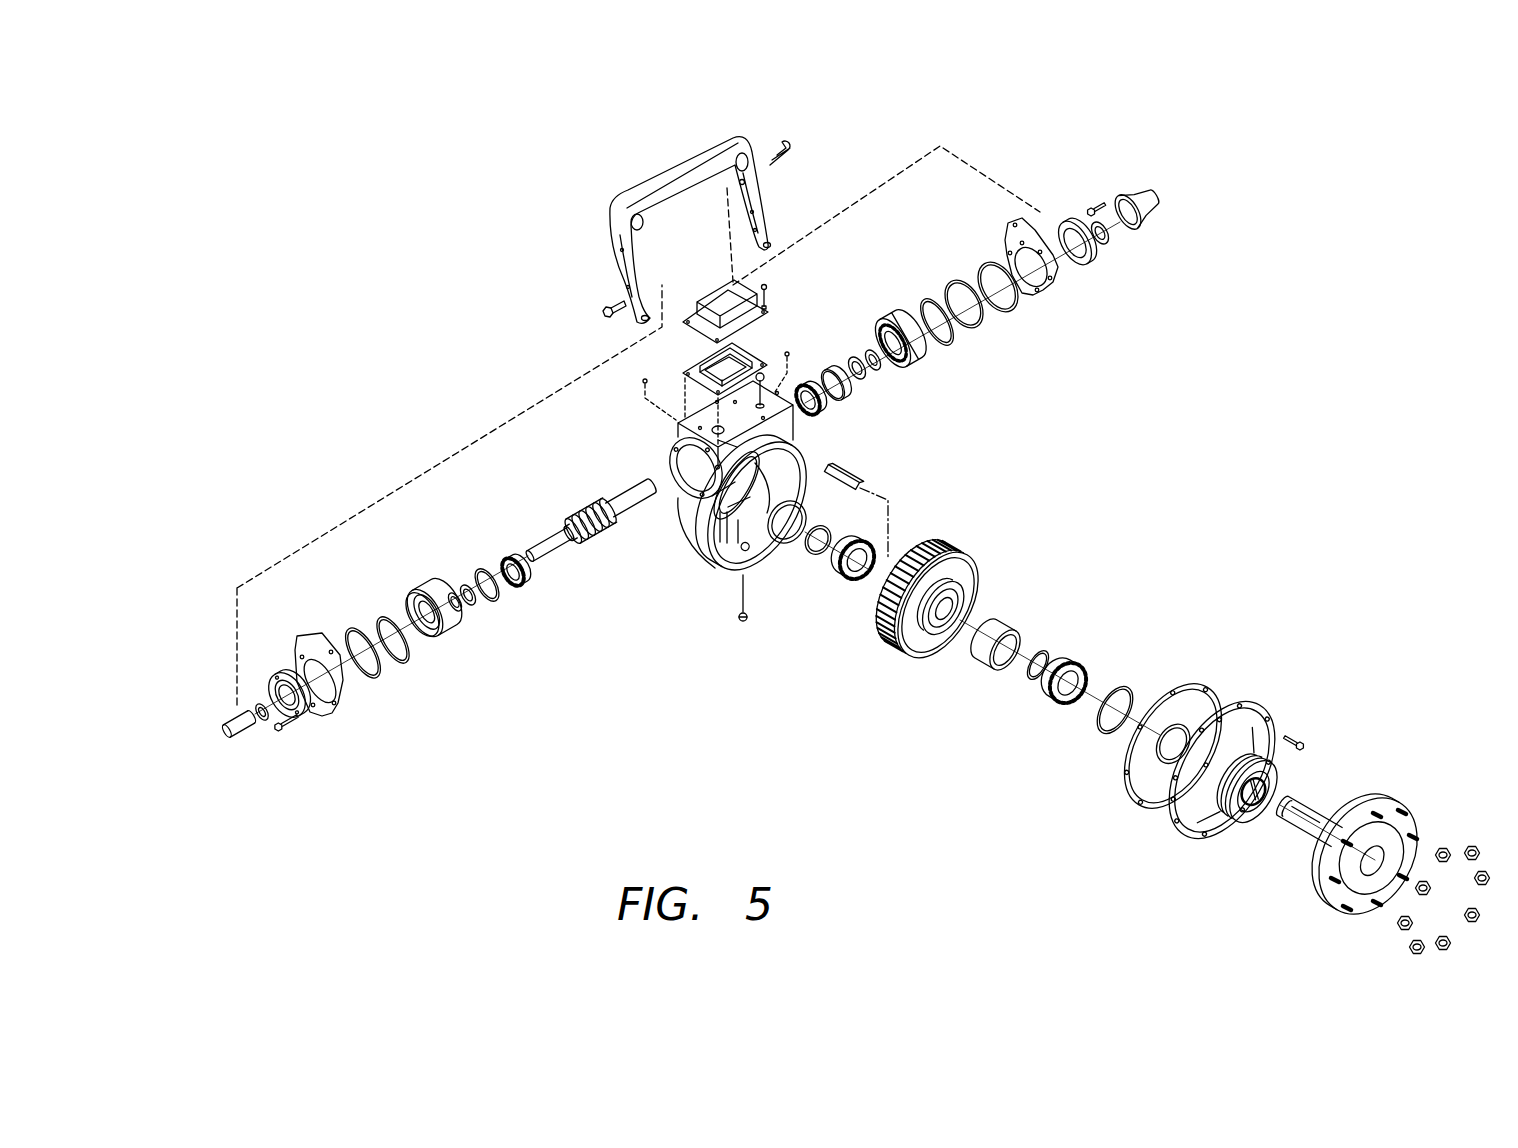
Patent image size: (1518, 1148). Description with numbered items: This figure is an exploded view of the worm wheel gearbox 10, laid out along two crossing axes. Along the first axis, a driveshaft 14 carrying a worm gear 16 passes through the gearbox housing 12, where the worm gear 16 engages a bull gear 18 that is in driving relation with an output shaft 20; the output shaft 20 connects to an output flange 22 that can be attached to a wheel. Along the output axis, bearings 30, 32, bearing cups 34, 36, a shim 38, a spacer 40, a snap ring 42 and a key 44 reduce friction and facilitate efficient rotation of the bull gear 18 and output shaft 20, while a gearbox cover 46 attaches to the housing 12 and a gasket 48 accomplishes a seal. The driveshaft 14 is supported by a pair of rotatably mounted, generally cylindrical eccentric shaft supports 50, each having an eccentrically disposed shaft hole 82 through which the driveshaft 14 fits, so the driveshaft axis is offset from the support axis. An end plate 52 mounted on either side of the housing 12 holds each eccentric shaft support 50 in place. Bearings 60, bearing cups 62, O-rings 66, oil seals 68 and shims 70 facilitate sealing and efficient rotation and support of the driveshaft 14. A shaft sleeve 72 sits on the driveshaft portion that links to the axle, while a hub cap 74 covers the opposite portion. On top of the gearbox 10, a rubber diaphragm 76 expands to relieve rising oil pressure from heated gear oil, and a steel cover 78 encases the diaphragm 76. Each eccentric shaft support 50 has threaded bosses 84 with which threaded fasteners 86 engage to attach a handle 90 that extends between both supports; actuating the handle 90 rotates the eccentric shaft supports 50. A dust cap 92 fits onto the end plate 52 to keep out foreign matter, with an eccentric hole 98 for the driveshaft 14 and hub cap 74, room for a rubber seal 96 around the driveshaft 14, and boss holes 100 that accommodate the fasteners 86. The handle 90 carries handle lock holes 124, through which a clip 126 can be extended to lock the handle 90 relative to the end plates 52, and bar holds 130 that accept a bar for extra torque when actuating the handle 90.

The worm wheel gearbox 10 is at (1152, 387).
The gearbox housing 12 is at (705, 541).
The driveshaft 14 is at (548, 543).
The worm gear 16 is at (597, 510).
The bull gear 18 is at (953, 550).
The output shaft 20 is at (1297, 827).
The output flange 22 is at (1380, 803).
The bearing 30 is at (1057, 697).
The bearing 32 is at (846, 586).
The bearing cup 34 is at (1133, 684).
The bearing cup 36 is at (788, 502).
The shim 38 is at (1033, 670).
The spacer 40 is at (1003, 630).
The snap ring 42 is at (813, 553).
The key 44 is at (851, 477).
The gearbox cover 46 is at (1237, 730).
The gasket 48 is at (1217, 690).
The eccentric shaft support 50 is at (448, 628).
The end plate 52 is at (330, 716).
The bearing 60 is at (503, 554).
The bearing cup 62 is at (490, 600).
The O-ring 66 is at (398, 668).
The oil seal 68 is at (463, 584).
The shim 70 is at (354, 637).
The shaft sleeve 72 is at (227, 723).
The hub cap 74 is at (1149, 192).
The rubber diaphragm 76 is at (740, 358).
The steel cover 78 is at (737, 296).
The shaft hole 82 is at (418, 648).
The threaded boss 84 is at (413, 606).
The threaded fastener 86 is at (604, 311).
The handle 90 is at (712, 230).
The dust cap 92 is at (277, 677).
The rubber seal 96 is at (260, 724).
The eccentric hole 98 is at (302, 718).
The boss hole 100 is at (272, 690).
The handle lock hole 124 is at (758, 187).
The clip 126 is at (788, 145).
The bar hold 130 is at (641, 226).